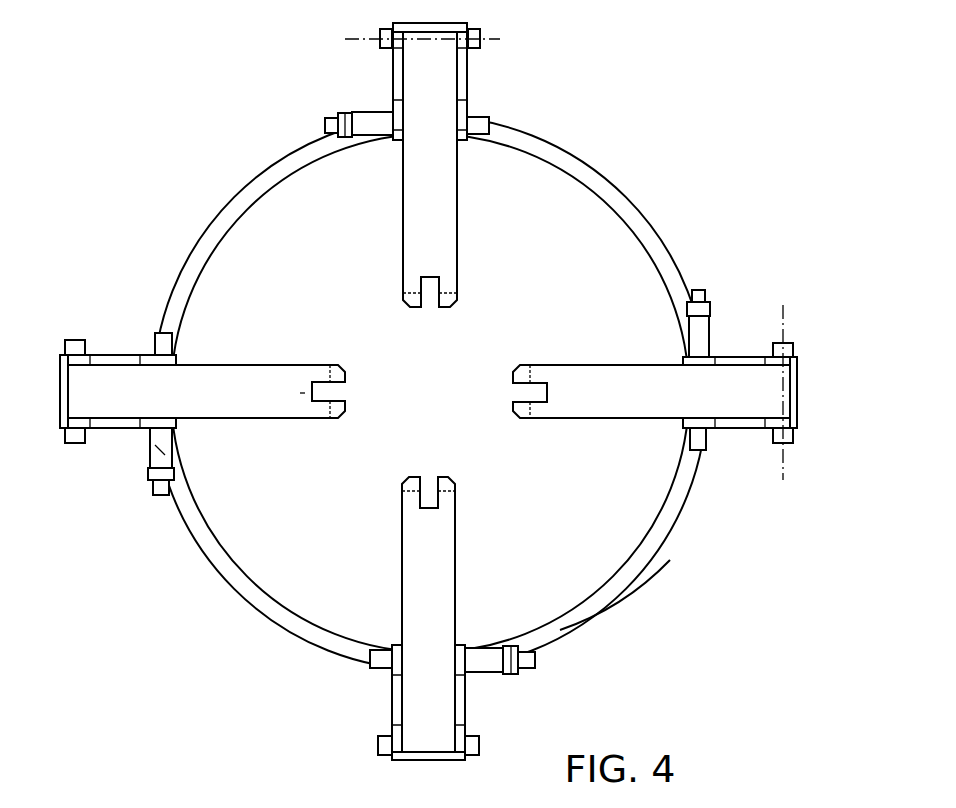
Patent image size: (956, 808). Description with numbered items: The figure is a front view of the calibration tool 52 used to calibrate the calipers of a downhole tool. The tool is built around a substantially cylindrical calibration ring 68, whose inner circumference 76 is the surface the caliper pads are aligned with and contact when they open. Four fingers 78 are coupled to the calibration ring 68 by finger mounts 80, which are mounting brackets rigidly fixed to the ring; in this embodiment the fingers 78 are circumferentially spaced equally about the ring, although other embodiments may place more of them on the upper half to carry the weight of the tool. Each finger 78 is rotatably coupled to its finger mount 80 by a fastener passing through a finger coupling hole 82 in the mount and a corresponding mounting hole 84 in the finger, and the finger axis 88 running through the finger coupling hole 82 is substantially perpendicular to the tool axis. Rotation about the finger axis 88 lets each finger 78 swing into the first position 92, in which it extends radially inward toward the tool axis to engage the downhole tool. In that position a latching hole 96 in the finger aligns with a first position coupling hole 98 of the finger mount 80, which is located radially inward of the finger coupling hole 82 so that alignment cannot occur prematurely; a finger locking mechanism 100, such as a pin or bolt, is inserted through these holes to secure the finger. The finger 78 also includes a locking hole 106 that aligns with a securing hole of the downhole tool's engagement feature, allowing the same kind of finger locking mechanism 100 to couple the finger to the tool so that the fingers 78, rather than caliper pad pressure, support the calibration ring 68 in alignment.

The calibration tool 52 is at (690, 48).
The calibration ring 68 is at (634, 200).
The inner circumference 76 is at (626, 540).
The finger 78 is at (457, 185).
The finger mount 80 is at (470, 712).
The finger coupling hole 82 is at (478, 752).
The mounting hole 84 is at (85, 345).
The finger axis 88 is at (508, 40).
The first position 92 is at (462, 556).
The latching hole 96 is at (388, 133).
The first position coupling hole 98 is at (150, 445).
The finger locking mechanism 100 is at (327, 126).
The locking hole 106 is at (410, 298).